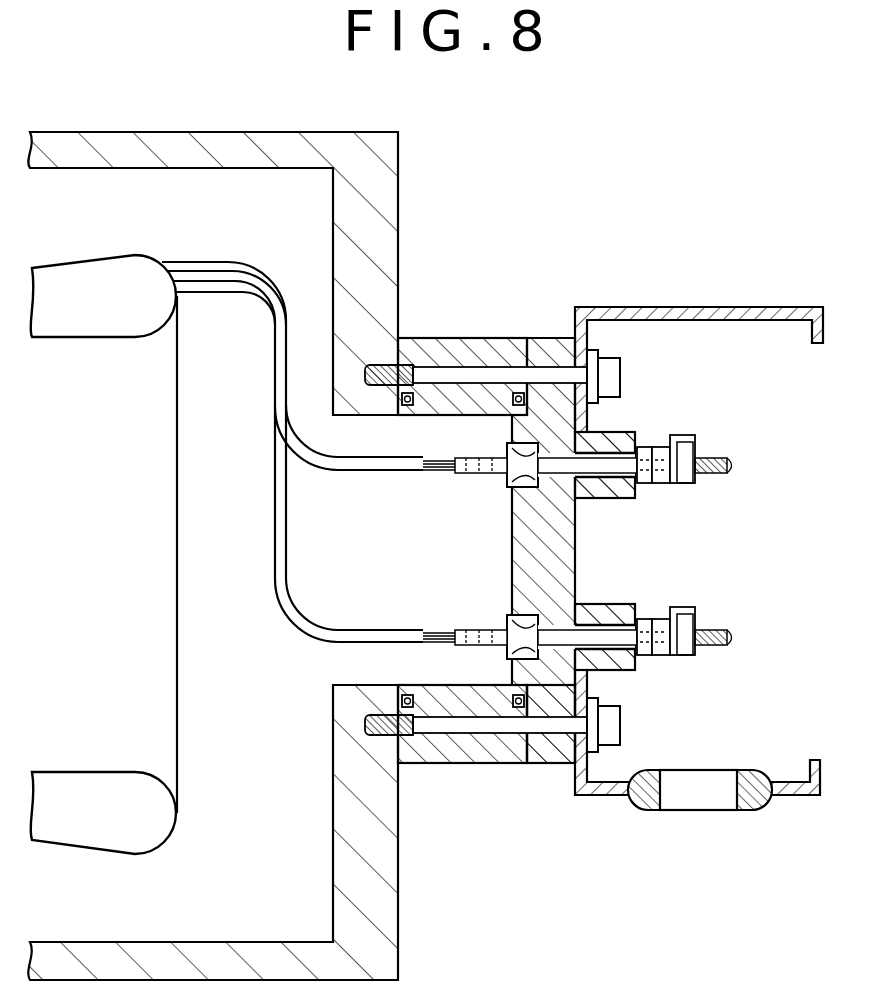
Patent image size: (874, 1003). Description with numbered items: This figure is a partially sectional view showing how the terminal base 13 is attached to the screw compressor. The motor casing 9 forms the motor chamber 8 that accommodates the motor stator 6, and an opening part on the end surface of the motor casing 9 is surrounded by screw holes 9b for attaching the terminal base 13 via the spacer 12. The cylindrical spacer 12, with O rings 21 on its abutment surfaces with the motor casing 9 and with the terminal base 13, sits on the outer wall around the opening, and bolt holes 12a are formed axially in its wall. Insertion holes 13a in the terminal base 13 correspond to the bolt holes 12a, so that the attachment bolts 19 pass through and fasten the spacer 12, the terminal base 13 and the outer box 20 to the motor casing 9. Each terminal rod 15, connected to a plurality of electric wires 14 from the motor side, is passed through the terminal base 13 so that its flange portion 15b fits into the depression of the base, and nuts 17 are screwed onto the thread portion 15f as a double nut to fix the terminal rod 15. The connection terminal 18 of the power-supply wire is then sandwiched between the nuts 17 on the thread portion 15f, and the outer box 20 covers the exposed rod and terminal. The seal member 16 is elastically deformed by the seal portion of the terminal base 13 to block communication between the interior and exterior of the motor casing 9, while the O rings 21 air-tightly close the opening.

The motor stator 6 is at (72, 318).
The motor chamber 8 is at (318, 890).
The motor casing 9 is at (385, 167).
The screw holes 9b is at (370, 727).
The spacer 12 is at (512, 353).
The bolt holes 12a is at (513, 725).
The terminal base 13 is at (545, 352).
The insertion holes 13a is at (553, 725).
The electric wires 14 is at (377, 462).
The terminal rod 15 is at (736, 465).
The flange portion 15b is at (522, 480).
The thread portion 15f is at (712, 457).
The seal member 16 is at (522, 450).
The nuts 17 is at (692, 617).
The connection terminal 18 is at (680, 436).
The attachment bolts 19 is at (610, 372).
The outer box 20 is at (712, 307).
The O rings 21 is at (518, 393).